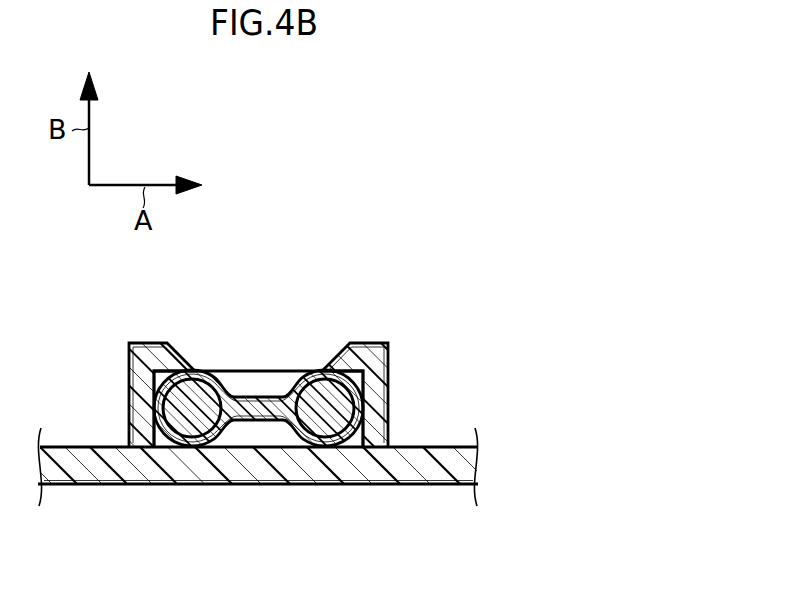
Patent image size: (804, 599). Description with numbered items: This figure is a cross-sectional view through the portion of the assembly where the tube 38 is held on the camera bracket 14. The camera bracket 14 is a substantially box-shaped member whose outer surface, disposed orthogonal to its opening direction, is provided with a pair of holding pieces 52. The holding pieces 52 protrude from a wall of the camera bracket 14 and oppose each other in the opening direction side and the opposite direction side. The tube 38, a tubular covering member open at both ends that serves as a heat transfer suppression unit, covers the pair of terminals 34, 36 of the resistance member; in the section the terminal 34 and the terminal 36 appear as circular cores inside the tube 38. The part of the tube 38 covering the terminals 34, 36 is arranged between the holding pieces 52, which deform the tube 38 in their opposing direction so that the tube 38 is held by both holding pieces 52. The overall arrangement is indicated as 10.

The wiring structure 10 is at (424, 225).
The camera bracket 14 is at (415, 484).
The terminal 34 is at (345, 417).
The terminal 36 is at (180, 416).
The tube 38 is at (253, 397).
The holding pieces 52 is at (129, 364).